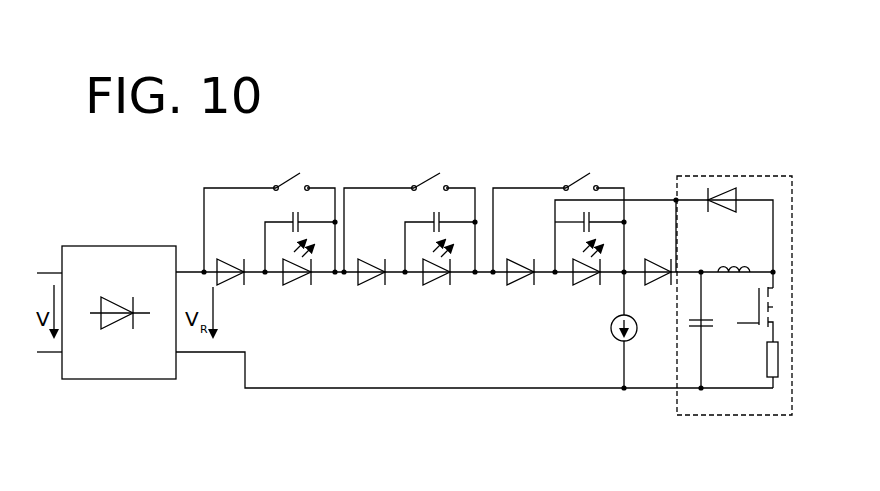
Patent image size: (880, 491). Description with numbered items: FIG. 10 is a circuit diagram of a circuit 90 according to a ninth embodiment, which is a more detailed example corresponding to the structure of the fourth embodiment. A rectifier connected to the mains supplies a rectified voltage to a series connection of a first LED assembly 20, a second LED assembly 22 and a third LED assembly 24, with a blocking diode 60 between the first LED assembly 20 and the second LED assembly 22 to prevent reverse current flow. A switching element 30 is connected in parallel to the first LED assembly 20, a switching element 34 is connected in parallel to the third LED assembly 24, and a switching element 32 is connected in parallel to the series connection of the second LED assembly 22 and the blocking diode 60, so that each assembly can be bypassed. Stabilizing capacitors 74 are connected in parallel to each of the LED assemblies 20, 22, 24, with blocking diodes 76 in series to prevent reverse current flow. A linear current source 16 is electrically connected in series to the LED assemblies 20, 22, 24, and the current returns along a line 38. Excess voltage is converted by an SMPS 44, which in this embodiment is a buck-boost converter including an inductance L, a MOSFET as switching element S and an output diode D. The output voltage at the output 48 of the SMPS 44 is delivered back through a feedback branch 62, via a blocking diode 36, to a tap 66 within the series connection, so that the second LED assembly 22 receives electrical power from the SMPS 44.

The circuit 90 is at (479, 122).
The switching element 34 is at (276, 184).
The switching element 30 is at (416, 184).
The switching element 32 is at (572, 184).
The stabilizing capacitor 74 is at (308, 218).
The blocking diode 76 is at (229, 265).
The third LED assembly 24 is at (287, 283).
The first LED assembly 20 is at (428, 283).
The second LED assembly 22 is at (583, 283).
The blocking diode 60 is at (514, 284).
The tap 66 is at (553, 266).
The diode 36 is at (680, 276).
The feedback branch 62 is at (660, 196).
The output 48 is at (674, 196).
The linear current source 16 is at (613, 334).
The return line 38 is at (661, 390).
The SMPS 44 is at (751, 303).
The output diode D is at (714, 195).
The inductance L is at (752, 265).
The switching element S is at (776, 307).